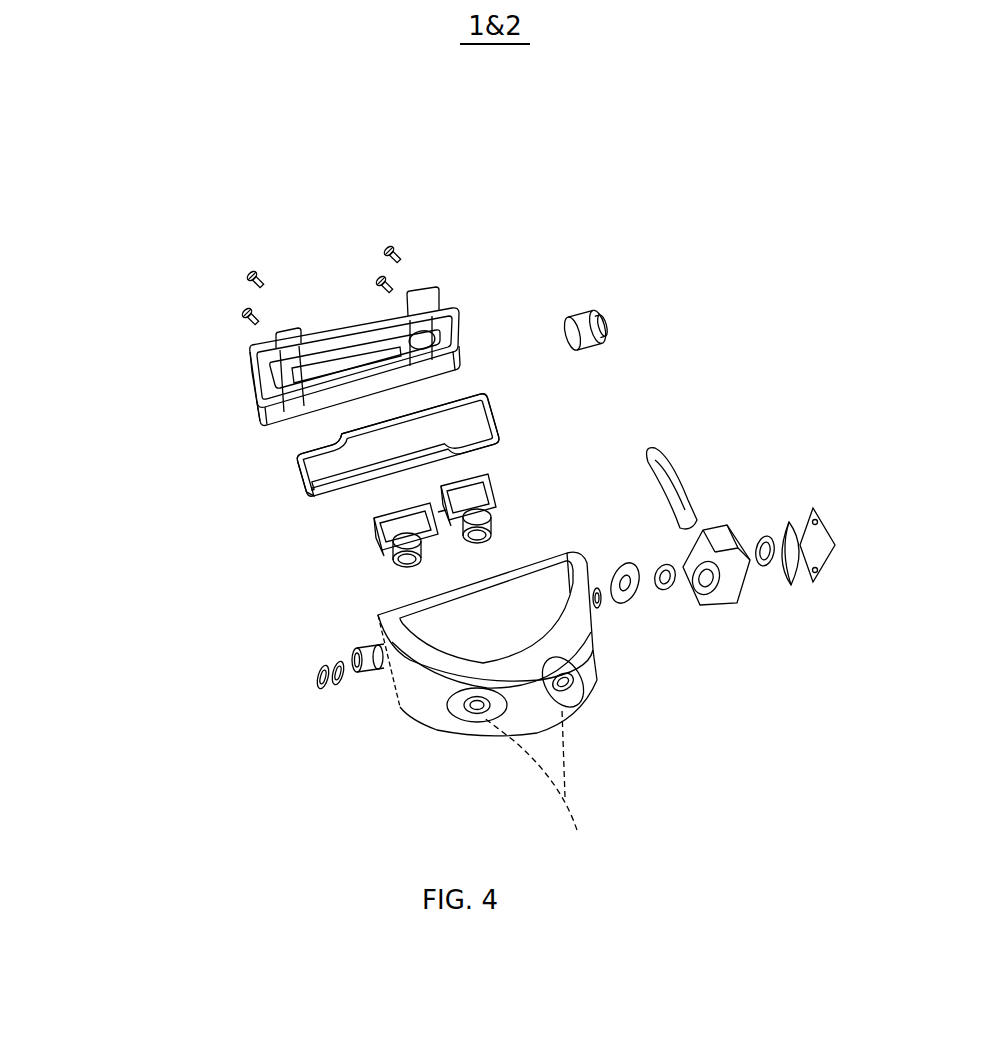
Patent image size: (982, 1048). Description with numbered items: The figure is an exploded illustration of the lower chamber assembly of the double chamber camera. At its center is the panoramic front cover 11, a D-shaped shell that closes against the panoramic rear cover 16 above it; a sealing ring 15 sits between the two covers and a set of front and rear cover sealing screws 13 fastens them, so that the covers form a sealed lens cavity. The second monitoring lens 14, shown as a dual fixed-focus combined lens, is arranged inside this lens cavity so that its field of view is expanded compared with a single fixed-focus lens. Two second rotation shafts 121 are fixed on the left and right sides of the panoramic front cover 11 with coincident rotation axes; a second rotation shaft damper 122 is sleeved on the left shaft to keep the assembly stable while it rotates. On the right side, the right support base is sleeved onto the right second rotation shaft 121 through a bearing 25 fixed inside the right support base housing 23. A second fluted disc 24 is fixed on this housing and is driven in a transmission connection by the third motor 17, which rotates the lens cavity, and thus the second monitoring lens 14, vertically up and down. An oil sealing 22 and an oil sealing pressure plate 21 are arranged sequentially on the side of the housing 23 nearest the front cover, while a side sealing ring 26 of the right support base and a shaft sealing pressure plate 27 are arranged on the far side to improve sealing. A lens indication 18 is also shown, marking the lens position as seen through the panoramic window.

The panoramic front cover 11 is at (400, 714).
The second rotation shaft 121 is at (352, 655).
The second rotation shaft damper 122 is at (340, 690).
The front and rear cover sealing screw 13 is at (253, 307).
The second monitoring lens 14 is at (370, 535).
The sealing ring 15 is at (290, 471).
The panoramic rear cover 16 is at (246, 388).
The third motor 17 is at (598, 310).
The lens indication 18 is at (544, 788).
The oil sealing pressure plate 21 is at (621, 560).
The oil sealing 22 is at (672, 590).
The right support base housing 23 is at (728, 588).
The second fluted disc 24 is at (673, 470).
The bearing 25 is at (760, 535).
The side sealing ring of right support base 26 is at (794, 580).
The shaft sealing pressure plate 27 is at (829, 560).